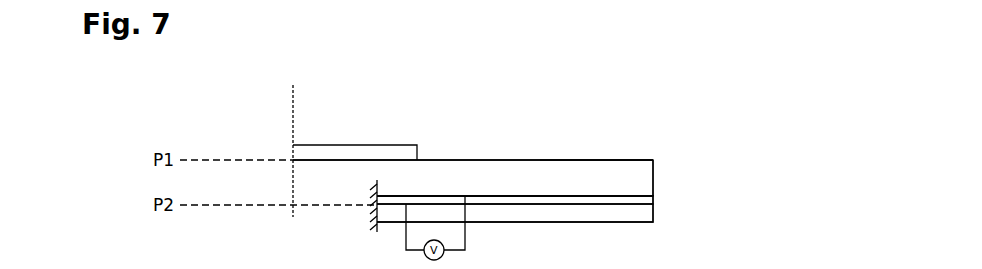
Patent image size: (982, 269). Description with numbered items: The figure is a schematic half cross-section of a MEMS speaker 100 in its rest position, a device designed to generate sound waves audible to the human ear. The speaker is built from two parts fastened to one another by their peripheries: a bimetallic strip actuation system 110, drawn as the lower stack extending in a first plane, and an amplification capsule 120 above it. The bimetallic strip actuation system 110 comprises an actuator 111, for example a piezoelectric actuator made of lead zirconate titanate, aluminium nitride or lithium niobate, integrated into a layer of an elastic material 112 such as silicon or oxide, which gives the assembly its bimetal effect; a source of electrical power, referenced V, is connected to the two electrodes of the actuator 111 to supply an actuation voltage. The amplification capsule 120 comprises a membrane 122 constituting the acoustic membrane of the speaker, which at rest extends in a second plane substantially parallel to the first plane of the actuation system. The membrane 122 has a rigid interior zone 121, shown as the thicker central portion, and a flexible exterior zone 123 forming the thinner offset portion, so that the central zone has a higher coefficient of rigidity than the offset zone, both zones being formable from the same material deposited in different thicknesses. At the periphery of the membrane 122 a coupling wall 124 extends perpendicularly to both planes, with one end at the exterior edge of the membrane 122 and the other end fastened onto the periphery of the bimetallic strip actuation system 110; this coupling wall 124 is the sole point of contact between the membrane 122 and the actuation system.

The MEMS speaker 100 is at (640, 237).
The bimetallic strip actuation system 110 is at (755, 178).
The actuator 111 is at (656, 196).
The layer of elastic material 112 is at (656, 218).
The amplification capsule 120 is at (715, 88).
The interior zone 121 is at (368, 145).
The membrane 122 is at (578, 159).
The exterior zone 123 is at (480, 158).
The coupling wall 124 is at (656, 170).